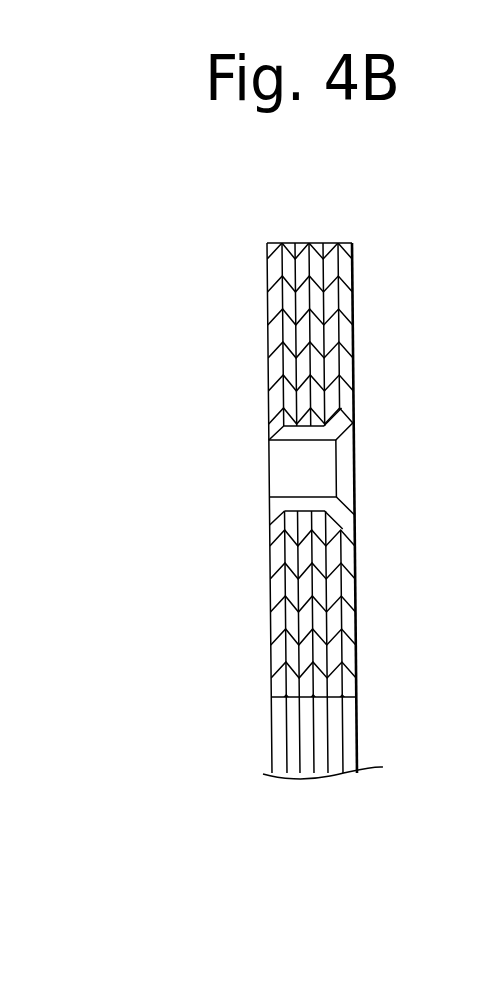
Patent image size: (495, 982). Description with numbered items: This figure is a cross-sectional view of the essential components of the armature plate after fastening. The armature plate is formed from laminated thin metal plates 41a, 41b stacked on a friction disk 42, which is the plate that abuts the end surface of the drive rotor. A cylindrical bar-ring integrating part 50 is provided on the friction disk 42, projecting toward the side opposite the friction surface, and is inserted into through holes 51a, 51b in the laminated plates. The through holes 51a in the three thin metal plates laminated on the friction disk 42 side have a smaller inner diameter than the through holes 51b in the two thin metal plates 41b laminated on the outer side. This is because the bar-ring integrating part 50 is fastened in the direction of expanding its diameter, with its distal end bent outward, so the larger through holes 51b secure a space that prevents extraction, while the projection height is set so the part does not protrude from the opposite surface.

The thin metal plate 41a is at (283, 323).
The thin metal plate 41b is at (348, 335).
The friction disk 42 is at (267, 364).
The bar-ring integrating part 50 is at (307, 500).
The through hole 51a is at (316, 503).
The through hole 51b is at (350, 420).